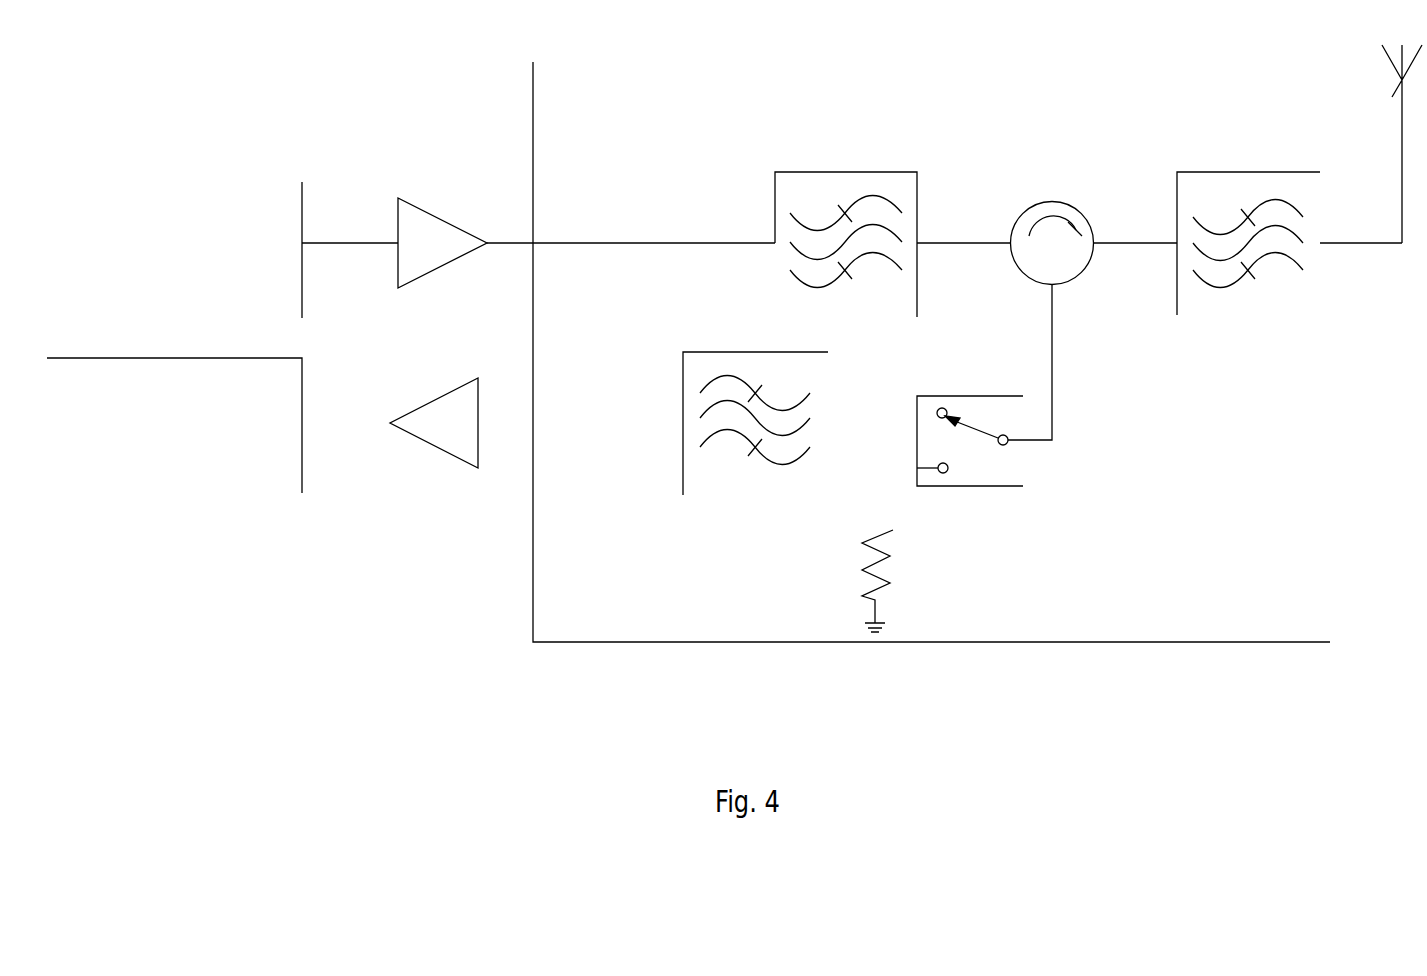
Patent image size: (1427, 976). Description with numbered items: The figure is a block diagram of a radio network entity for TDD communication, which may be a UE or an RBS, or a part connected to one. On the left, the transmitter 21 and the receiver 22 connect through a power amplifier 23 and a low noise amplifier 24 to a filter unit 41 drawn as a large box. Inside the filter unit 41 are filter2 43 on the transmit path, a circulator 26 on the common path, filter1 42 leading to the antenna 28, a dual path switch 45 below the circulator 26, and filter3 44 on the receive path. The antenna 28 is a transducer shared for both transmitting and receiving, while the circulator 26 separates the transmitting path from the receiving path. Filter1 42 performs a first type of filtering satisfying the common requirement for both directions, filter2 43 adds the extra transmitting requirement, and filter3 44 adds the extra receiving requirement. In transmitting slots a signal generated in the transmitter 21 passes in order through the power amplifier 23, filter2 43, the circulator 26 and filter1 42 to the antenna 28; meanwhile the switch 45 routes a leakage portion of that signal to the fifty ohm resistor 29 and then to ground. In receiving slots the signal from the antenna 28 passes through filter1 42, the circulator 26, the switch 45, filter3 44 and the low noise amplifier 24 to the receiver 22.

The transmitter 21 is at (220, 183).
The receiver 22 is at (227, 493).
The power amplifier 23 is at (437, 213).
The low noise amplifier 24 is at (442, 448).
The circulator 26 is at (1067, 285).
The antenna 28 is at (1374, 144).
The 50 ohm resistor 29 is at (916, 575).
The filter unit 41 is at (533, 98).
The filter1 42 is at (1225, 317).
The filter2 43 is at (772, 188).
The filter3 44 is at (683, 378).
The dual path switch 45 is at (985, 486).